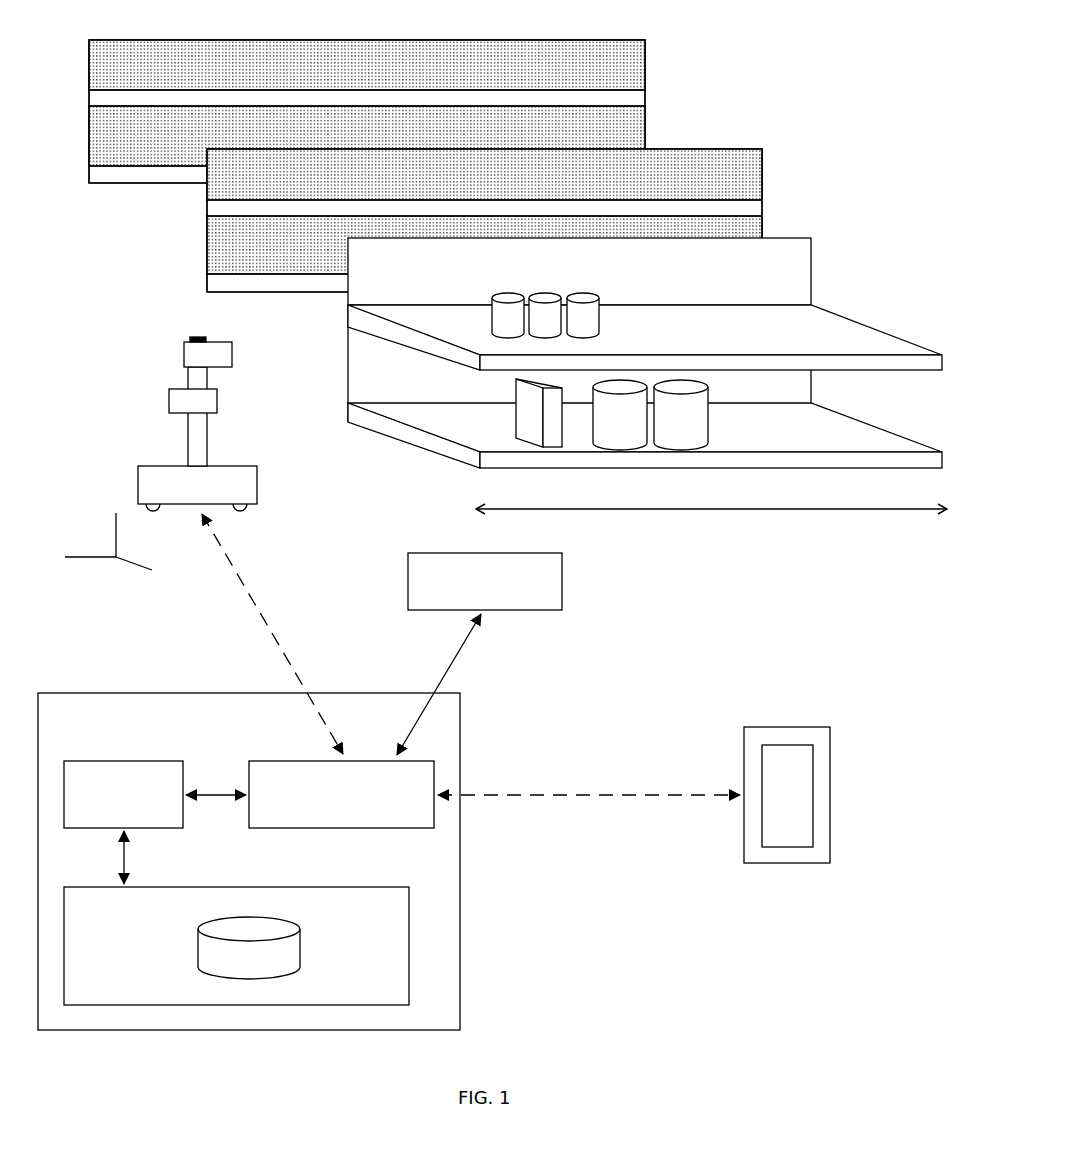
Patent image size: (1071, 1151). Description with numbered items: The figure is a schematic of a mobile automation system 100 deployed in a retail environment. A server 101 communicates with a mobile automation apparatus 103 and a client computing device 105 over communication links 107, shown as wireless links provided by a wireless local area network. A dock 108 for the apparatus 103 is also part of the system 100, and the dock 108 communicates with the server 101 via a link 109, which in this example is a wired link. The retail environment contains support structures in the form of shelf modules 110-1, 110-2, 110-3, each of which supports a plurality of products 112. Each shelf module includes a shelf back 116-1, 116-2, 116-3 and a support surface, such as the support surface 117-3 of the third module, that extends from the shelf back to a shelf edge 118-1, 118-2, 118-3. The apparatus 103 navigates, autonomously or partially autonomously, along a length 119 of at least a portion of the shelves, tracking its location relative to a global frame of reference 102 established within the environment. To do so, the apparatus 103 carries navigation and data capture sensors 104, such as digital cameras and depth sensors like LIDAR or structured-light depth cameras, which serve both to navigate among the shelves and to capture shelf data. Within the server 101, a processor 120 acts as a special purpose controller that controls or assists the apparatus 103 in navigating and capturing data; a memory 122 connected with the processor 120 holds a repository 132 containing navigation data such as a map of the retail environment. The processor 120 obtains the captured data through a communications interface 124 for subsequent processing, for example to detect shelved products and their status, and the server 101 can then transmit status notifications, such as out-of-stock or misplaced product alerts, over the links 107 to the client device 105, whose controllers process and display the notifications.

The mobile automation system 100 is at (826, 622).
The server 101 is at (249, 861).
The frame of reference 102 is at (108, 587).
The mobile automation apparatus 103 is at (197, 418).
The navigation and data capture sensors 104 is at (184, 353).
The client computing device 105 is at (834, 731).
The communication links 107 is at (471, 654).
The dock 108 is at (485, 581).
The link 109 is at (451, 684).
The shelf module 110-1 is at (394, 103).
The shelf module 110-2 is at (481, 199).
The shelf module 110-3 is at (645, 333).
The products 112 is at (517, 410).
The shelf back 116-1 is at (633, 133).
The shelf back 116-2 is at (752, 186).
The shelf back 116-3 is at (795, 282).
The support surface 117-3 is at (810, 330).
The shelf edge 118-1 is at (100, 100).
The shelf edge 118-2 is at (215, 208).
The shelf edge 118-3 is at (877, 365).
The length 119 is at (712, 510).
The processor 120 is at (123, 794).
The memory 122 is at (236, 946).
The communications interface 124 is at (341, 794).
The repository 132 is at (302, 947).